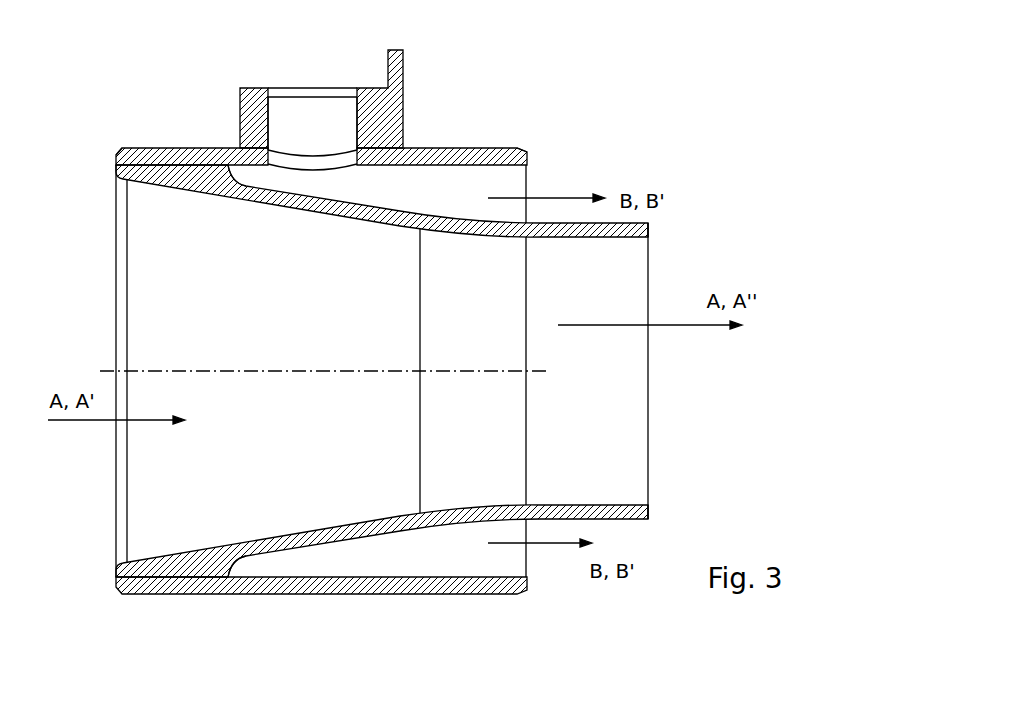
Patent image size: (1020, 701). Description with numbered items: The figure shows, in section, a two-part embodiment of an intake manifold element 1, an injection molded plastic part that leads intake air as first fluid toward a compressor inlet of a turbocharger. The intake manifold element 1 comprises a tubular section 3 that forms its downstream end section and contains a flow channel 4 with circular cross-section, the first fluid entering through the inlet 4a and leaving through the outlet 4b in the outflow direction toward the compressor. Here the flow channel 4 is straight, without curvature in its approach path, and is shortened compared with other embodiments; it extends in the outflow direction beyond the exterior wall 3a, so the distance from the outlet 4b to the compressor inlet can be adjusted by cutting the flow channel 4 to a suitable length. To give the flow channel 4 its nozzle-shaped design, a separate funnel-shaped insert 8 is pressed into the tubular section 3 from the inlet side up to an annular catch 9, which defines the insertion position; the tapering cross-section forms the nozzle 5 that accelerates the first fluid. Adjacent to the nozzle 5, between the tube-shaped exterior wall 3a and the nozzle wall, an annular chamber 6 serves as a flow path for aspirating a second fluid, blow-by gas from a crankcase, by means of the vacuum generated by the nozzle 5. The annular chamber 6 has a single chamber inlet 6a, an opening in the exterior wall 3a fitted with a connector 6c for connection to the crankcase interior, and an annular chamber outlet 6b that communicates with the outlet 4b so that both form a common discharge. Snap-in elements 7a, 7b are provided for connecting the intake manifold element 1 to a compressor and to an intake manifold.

The intake manifold element 1 is at (492, 78).
The tubular section 3 is at (301, 357).
The exterior wall 3a is at (433, 147).
The flow channel 4 is at (526, 417).
The inlet 4a is at (120, 308).
The outlet 4b is at (648, 460).
The nozzle 5 is at (176, 287).
The annular chamber 6 is at (440, 204).
The chamber inlet 6a is at (314, 157).
The chamber outlet 6b is at (520, 177).
The connector 6c is at (400, 122).
The snap-in element 7a is at (132, 148).
The snap-in element 7b is at (518, 144).
The funnel-shaped insert 8 is at (635, 227).
The catch 9 is at (228, 167).